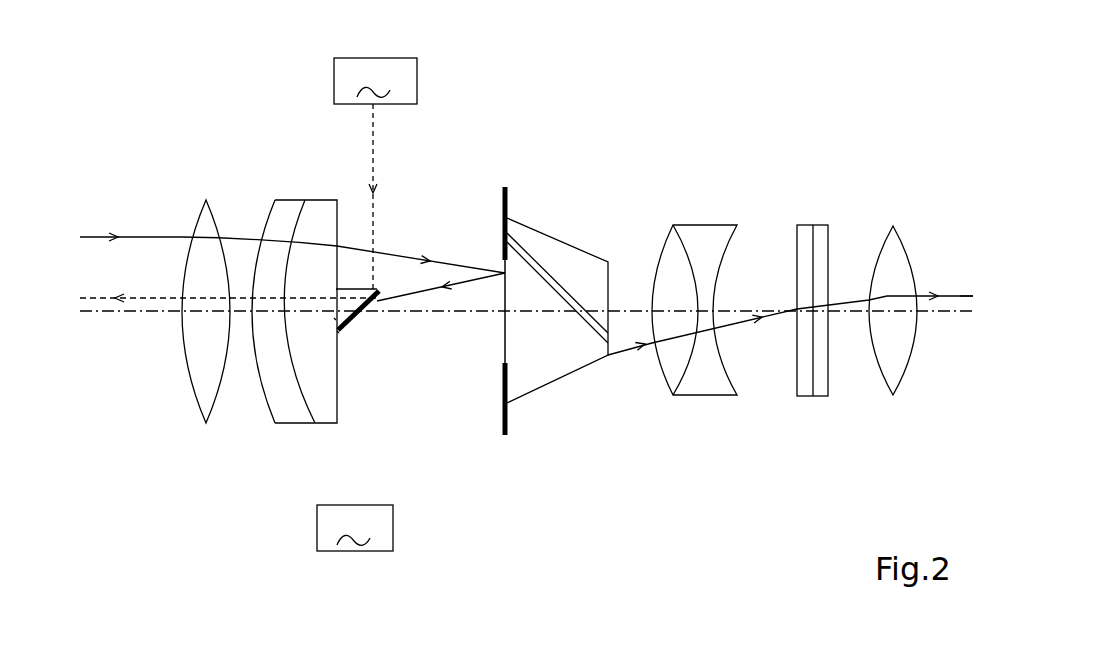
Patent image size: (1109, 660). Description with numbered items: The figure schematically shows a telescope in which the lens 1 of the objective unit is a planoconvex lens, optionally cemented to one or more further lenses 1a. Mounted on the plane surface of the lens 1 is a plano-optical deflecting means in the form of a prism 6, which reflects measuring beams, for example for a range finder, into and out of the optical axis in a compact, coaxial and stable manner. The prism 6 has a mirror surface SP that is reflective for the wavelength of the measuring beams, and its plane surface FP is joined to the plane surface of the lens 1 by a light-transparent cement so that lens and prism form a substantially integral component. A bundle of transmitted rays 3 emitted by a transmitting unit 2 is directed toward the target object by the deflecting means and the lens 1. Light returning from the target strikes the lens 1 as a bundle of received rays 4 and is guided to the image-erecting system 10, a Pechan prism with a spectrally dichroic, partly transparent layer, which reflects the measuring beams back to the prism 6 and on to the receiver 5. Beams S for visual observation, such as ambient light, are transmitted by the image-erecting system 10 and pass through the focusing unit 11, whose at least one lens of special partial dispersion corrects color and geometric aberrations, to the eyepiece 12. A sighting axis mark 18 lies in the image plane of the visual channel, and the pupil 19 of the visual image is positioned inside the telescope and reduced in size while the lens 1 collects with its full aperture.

The lens 1 is at (318, 205).
The lenses 1a is at (283, 205).
The transmitting unit 2 is at (375, 173).
The bundle of transmitted rays 3 is at (130, 299).
The bundle of received rays 4 is at (140, 237).
The receiver 5 is at (370, 300).
The prism 6 is at (350, 289).
The image-erecting system 10 is at (575, 382).
The focusing unit 11 is at (690, 212).
The eyepiece 12 is at (883, 398).
The sighting axis mark 18 is at (815, 218).
The pupil 19 is at (508, 191).
The beams S is at (960, 296).
The plane surface of the prism FP is at (335, 319).
The mirror surface SP is at (338, 332).